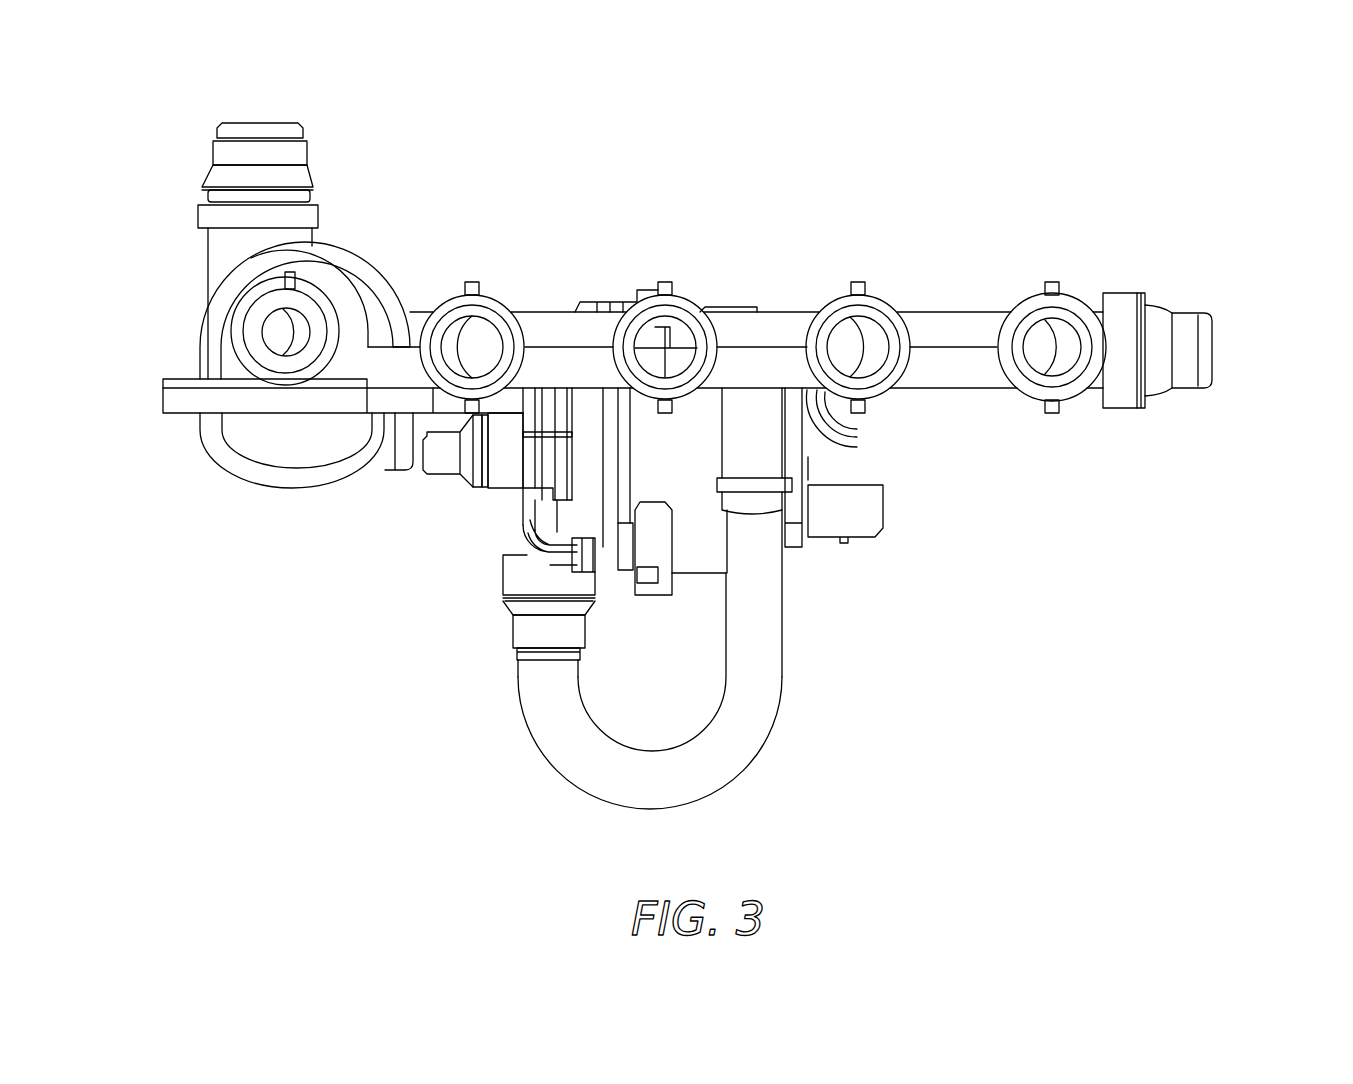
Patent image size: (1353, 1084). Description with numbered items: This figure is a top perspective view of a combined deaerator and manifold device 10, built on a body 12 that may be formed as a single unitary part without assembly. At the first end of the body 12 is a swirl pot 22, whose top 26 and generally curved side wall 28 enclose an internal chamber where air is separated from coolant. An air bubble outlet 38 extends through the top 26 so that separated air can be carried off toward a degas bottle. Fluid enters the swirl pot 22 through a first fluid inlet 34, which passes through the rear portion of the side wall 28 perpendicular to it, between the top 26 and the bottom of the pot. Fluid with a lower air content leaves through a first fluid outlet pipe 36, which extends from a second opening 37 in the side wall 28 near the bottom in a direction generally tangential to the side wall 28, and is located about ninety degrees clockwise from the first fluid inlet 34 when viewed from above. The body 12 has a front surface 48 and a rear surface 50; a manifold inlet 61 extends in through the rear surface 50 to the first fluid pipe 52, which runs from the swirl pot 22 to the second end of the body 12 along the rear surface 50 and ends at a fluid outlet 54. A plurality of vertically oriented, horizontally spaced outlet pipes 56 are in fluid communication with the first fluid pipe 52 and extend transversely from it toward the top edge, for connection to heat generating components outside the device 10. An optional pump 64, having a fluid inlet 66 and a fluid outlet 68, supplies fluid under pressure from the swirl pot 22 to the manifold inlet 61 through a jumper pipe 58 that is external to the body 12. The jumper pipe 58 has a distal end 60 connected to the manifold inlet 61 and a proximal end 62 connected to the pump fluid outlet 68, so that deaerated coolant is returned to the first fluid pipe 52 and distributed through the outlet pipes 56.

The combined deaerator and manifold device 10 is at (172, 148).
The body 12 is at (597, 340).
The swirl pot 22 is at (173, 292).
The top 26 is at (287, 445).
The side wall 28 is at (393, 273).
The first fluid inlet 34 is at (258, 122).
The first fluid outlet pipe 36 is at (405, 465).
The second opening 37 is at (385, 470).
The air bubble outlet 38 is at (287, 333).
The front surface 48 is at (552, 312).
The rear surface 50 is at (930, 390).
The first fluid pipe 52 is at (953, 380).
The fluid outlet 54 is at (1232, 353).
The outlet pipes 56 is at (872, 345).
The jumper pipe 58 is at (753, 717).
The distal end 60 is at (768, 533).
The manifold inlet 61 is at (762, 403).
The proximal end 62 is at (530, 632).
The pump 64 is at (657, 598).
The fluid inlet 66 is at (498, 463).
The fluid outlet 68 is at (553, 662).